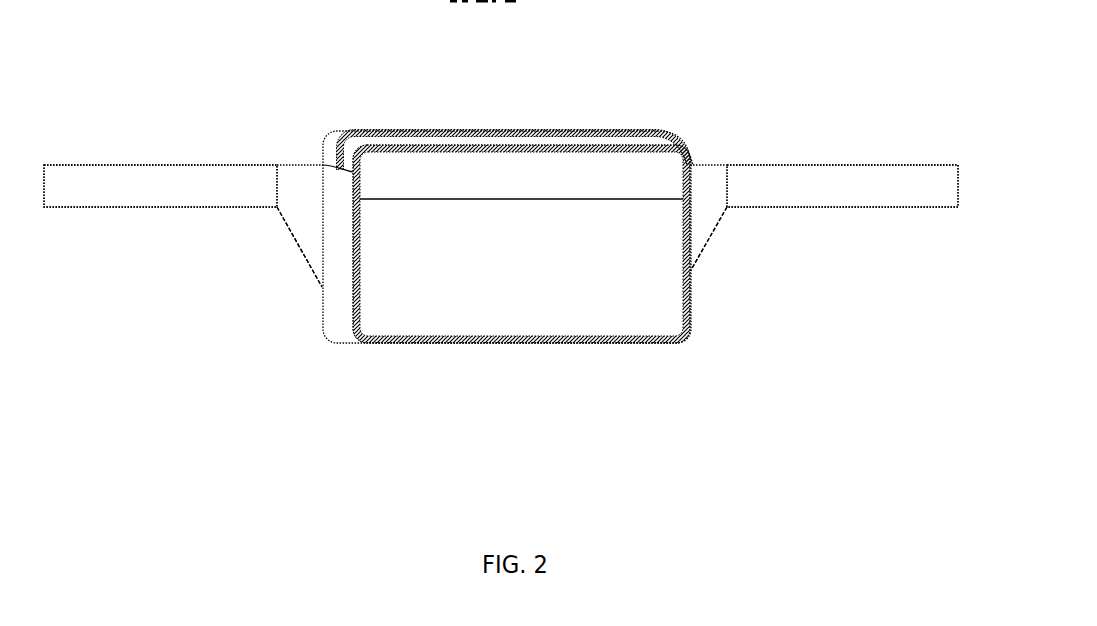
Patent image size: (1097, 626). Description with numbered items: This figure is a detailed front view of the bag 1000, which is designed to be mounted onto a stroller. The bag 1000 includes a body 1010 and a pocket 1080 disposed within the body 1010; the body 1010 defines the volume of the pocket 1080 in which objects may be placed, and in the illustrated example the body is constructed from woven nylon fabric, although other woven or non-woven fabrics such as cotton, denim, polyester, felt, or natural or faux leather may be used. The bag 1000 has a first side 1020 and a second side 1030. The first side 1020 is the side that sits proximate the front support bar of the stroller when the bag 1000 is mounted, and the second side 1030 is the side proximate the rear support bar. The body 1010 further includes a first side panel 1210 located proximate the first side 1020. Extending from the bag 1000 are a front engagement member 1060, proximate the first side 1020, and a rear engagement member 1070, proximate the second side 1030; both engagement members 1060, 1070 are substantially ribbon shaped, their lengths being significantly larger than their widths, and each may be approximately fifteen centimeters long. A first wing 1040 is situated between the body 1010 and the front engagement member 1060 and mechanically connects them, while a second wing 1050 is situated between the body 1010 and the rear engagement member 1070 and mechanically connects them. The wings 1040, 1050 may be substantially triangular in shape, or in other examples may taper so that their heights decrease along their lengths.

The bag 1000 is at (677, 384).
The body 1010 is at (352, 325).
The first side 1020 is at (312, 307).
The second side 1030 is at (704, 279).
The first wing 1040 is at (294, 234).
The second wing 1050 is at (715, 230).
The front engagement member 1060 is at (150, 164).
The rear engagement member 1070 is at (930, 165).
The pocket 1080 is at (472, 213).
The first side panel 1210 is at (327, 185).